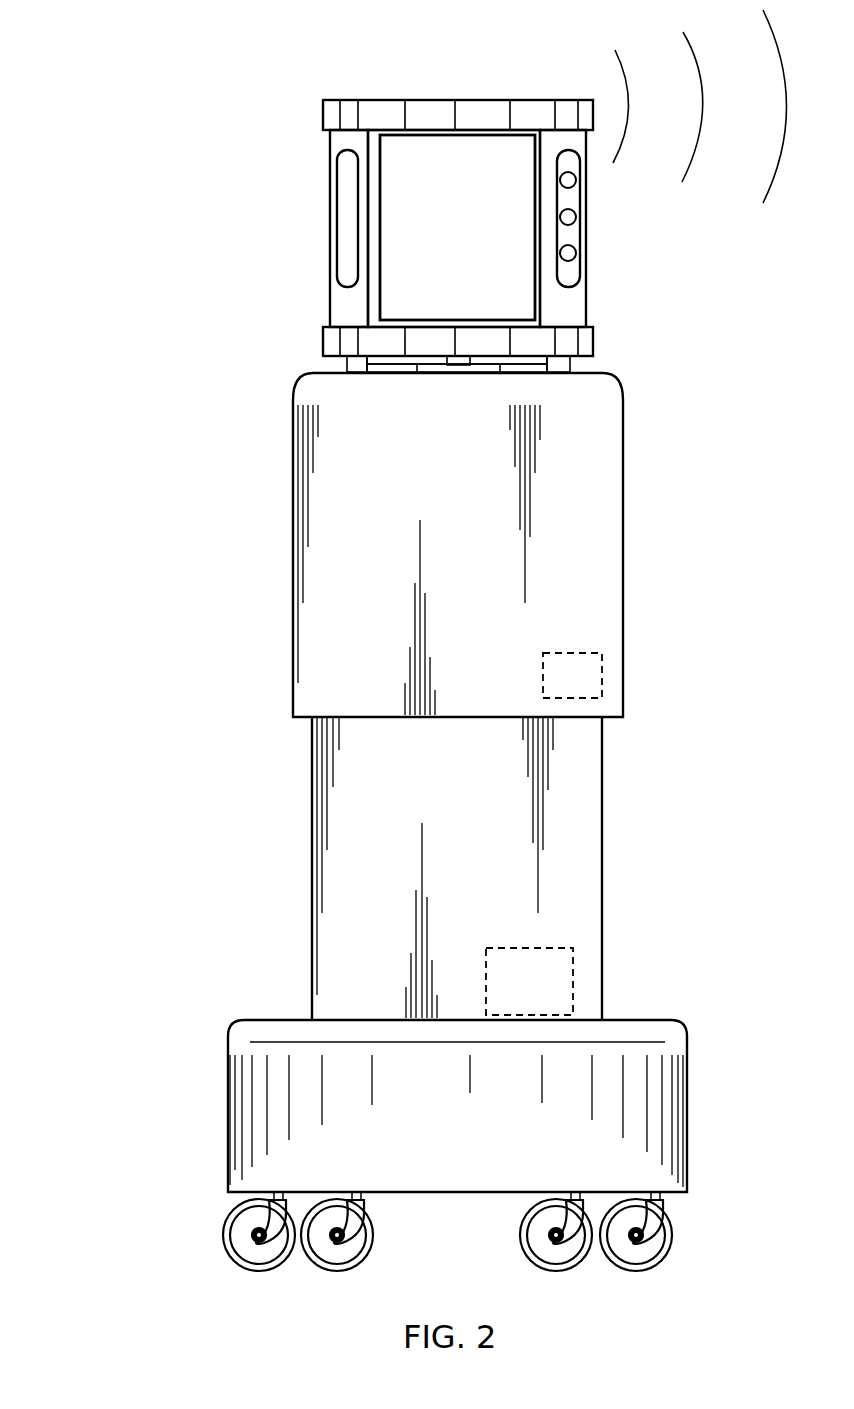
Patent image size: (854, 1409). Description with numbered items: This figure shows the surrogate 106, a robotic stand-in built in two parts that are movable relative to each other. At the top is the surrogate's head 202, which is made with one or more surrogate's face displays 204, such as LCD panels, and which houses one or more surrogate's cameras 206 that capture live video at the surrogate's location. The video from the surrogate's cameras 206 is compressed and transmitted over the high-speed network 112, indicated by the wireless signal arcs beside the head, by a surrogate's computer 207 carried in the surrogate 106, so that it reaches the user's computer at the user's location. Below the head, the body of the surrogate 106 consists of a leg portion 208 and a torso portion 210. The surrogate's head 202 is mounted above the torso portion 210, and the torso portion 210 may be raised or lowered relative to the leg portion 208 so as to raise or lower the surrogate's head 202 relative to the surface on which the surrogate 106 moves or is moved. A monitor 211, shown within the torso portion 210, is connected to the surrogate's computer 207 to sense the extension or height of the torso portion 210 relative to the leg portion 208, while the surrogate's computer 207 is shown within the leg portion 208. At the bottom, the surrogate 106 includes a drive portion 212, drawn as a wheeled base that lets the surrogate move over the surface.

The surrogate 106 is at (176, 568).
The high-speed network 112 is at (600, 62).
The surrogate's head 202 is at (327, 305).
The surrogate's face display 204 is at (413, 226).
The surrogate's camera 206 is at (577, 248).
The surrogate's computer 207 is at (529, 981).
The leg portion 208 is at (311, 880).
The torso portion 210 is at (295, 502).
The monitor 211 is at (572, 675).
The drive portion 212 is at (225, 1120).